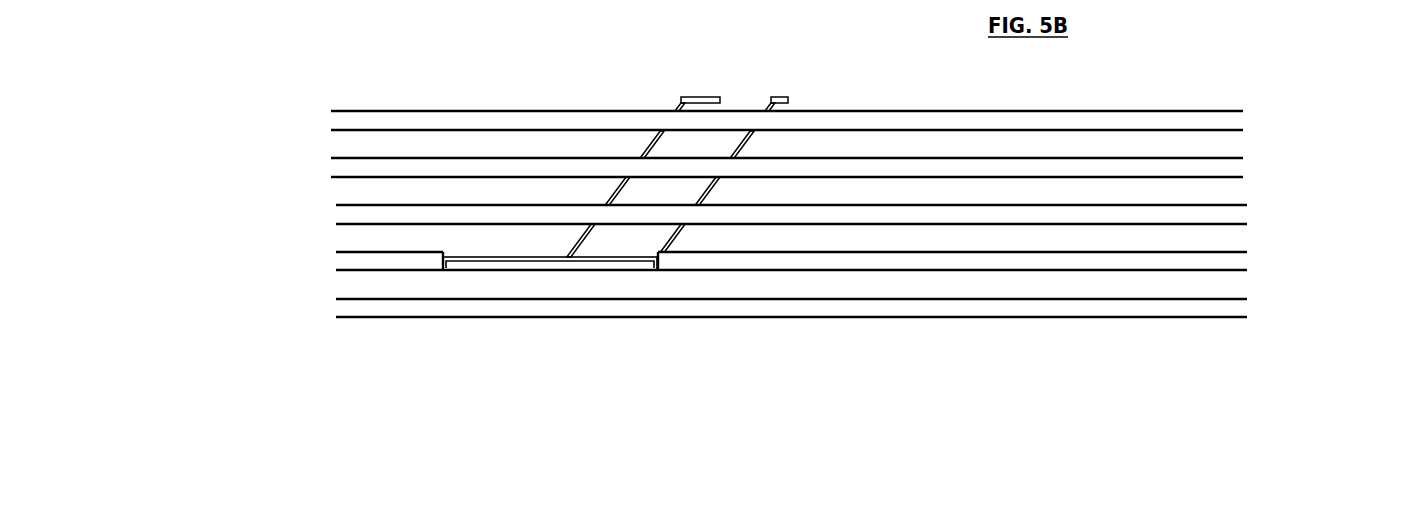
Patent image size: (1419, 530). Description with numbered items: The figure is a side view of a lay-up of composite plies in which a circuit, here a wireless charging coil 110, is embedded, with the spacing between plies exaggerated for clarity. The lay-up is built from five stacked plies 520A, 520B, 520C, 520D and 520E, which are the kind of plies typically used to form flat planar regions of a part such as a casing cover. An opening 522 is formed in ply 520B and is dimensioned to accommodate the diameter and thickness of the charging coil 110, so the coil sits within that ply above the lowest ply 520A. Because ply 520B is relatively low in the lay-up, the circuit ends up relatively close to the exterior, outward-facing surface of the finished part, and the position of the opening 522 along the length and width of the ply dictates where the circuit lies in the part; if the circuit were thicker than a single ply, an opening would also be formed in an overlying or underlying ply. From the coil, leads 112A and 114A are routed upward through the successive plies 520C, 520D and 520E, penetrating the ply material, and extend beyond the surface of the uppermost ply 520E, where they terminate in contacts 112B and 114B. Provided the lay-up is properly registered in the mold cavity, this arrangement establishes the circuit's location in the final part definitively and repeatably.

The wireless charging coil 110 is at (518, 258).
The lead 112A is at (612, 197).
The contact 112B is at (683, 97).
The lead 114A is at (677, 233).
The contact 114B is at (780, 98).
The ply 520A is at (1188, 307).
The ply 520B is at (1228, 262).
The ply 520C is at (1237, 213).
The ply 520D is at (1242, 167).
The ply 520E is at (1250, 115).
The opening 522 is at (472, 237).